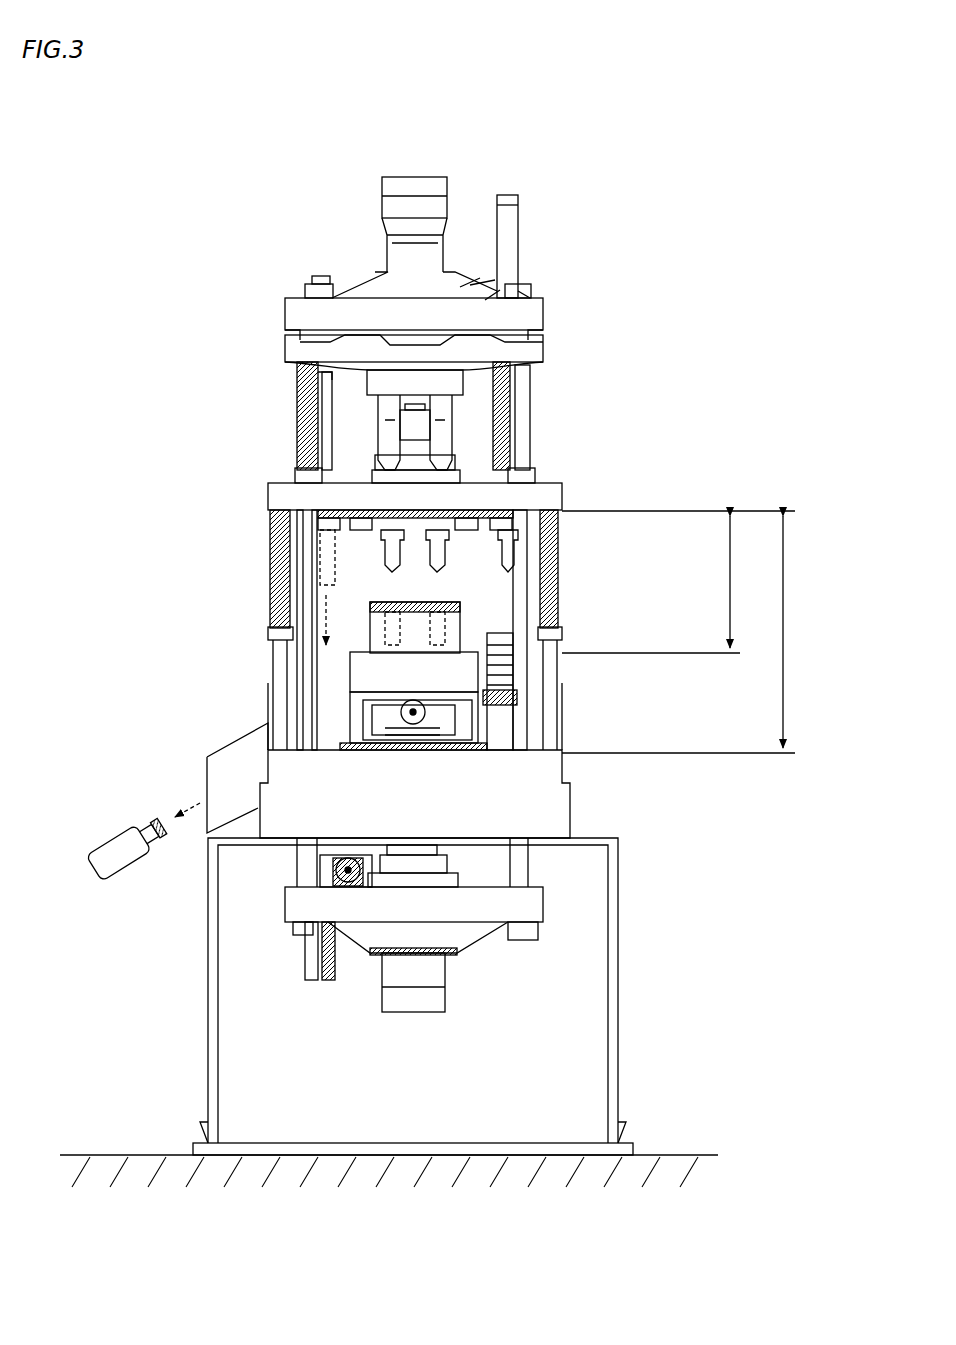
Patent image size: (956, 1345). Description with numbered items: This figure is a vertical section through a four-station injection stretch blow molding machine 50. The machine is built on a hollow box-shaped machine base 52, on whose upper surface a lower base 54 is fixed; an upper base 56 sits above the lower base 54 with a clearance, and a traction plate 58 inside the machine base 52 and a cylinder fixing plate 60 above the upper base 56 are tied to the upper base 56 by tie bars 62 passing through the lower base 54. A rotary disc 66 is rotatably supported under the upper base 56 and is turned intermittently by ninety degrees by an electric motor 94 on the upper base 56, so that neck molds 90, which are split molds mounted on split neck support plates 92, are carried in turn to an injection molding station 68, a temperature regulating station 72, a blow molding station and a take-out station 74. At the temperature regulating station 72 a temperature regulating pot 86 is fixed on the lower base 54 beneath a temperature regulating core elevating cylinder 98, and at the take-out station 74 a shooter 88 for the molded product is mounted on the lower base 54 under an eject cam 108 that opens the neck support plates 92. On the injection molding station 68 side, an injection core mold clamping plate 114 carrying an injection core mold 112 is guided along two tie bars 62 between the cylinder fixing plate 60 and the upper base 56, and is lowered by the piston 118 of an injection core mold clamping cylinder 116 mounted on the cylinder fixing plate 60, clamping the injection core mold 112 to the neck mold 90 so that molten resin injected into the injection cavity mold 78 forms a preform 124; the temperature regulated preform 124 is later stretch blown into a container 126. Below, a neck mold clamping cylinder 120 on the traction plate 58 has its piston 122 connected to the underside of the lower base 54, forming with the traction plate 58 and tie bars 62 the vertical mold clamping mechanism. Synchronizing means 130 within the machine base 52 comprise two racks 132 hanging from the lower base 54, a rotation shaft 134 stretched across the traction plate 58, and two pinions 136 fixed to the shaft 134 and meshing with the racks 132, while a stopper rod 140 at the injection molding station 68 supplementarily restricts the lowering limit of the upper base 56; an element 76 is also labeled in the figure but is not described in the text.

The blow molding machine 50 is at (632, 302).
The machine base 52 is at (620, 935).
The lower base 54 is at (575, 810).
The upper base 56 is at (540, 495).
The traction plate 58 is at (475, 940).
The cylinder fixing plate 60 is at (455, 290).
The tie bars 62 is at (303, 562).
The rotary disc 66 is at (548, 530).
The injection molding station 68 is at (560, 614).
The temperature regulating station 72 is at (568, 642).
The take-out station 74 is at (262, 625).
The bottom mold drive mechanism 76 is at (448, 738).
The injection cavity mold 78 is at (450, 660).
The temperature regulating pot 86 is at (560, 680).
The shooter 88 is at (235, 755).
The neck molds 90 is at (378, 545).
The neck support plates 92 is at (430, 510).
The electric motor 94 is at (432, 430).
The temperature regulating core elevating cylinder 98 is at (508, 225).
The eject cam 108 is at (297, 428).
The injection core mold 112 is at (520, 437).
The injection core mold clamping plate 114 is at (543, 345).
The injection core mold clamping cylinder 116 is at (415, 180).
The piston 118 is at (412, 345).
The neck mold clamping cylinder 120 is at (432, 1010).
The piston 122 is at (405, 860).
The preform 124 is at (390, 548).
The container 126 is at (268, 528).
The synchronizing means 130 is at (290, 945).
The racks 132 is at (332, 975).
The rotation shaft 134 is at (320, 870).
The pinions 136 is at (352, 855).
The stopper rod 140 is at (268, 690).